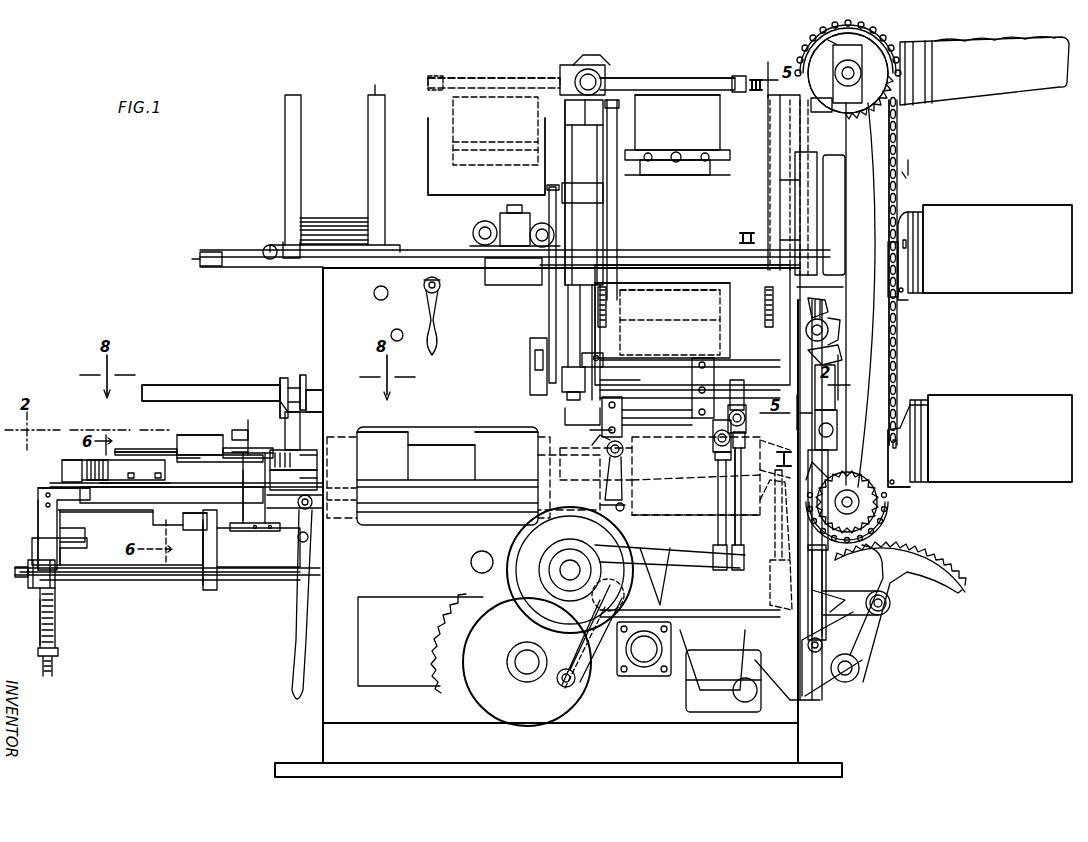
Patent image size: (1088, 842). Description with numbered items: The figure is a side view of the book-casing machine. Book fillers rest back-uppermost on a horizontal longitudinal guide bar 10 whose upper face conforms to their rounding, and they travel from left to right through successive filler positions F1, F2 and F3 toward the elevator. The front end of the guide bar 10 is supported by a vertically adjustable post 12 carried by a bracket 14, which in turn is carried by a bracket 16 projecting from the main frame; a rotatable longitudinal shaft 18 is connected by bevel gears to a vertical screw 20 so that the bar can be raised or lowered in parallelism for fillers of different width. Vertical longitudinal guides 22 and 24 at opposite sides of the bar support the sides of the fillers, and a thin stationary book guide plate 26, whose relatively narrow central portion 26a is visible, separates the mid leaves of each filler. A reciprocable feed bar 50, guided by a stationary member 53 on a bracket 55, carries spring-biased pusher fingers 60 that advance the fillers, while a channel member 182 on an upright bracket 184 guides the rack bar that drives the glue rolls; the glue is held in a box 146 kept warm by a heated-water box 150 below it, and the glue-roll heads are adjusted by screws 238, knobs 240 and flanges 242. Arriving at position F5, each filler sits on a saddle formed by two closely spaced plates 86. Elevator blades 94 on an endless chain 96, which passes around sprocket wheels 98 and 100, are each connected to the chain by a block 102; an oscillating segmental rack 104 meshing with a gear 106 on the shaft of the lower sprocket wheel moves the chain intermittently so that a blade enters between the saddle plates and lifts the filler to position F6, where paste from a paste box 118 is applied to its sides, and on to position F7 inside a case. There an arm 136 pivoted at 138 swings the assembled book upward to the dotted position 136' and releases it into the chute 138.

The guide bar 10 is at (58, 490).
The post 12 is at (44, 523).
The bracket 14 is at (104, 552).
The bracket 16 is at (243, 562).
The longitudinal shaft 18 is at (145, 570).
The screw 20 is at (54, 617).
The vertical longitudinal guide 22 is at (70, 468).
The vertical longitudinal guide 24 is at (138, 468).
The book guide plate 26 is at (183, 520).
The narrow central portion of guide plate 26a is at (430, 452).
The feed bar 50 is at (180, 450).
The stationary member 53 is at (238, 452).
The bracket 55 is at (245, 493).
The pusher finger 60 is at (152, 447).
The saddle plate 86 is at (752, 455).
The elevator blade 94 is at (765, 185).
The endless chain 96 is at (897, 342).
The sprocket wheel 98 is at (872, 112).
The sprocket wheel 100 is at (882, 512).
The block 102 is at (908, 490).
The oscillating segmental rack 104 is at (935, 572).
The gear 106 is at (892, 468).
The paste box 118 is at (626, 272).
The arm 136 is at (667, 65).
The raised position of arm 136' is at (494, 54).
The pivot axis / chute 138 is at (590, 70).
The glue box 146 is at (317, 456).
The heated water box 150 is at (317, 478).
The longitudinal channel member 182 is at (190, 385).
The upright bracket 184 is at (256, 424).
The screw 238 is at (316, 390).
The knob 240 is at (282, 385).
The flange 242 is at (303, 375).
The filler position F1 is at (198, 436).
The filler position F2 is at (398, 440).
The filler position F3 is at (500, 440).
The filler position F5 is at (655, 495).
The filler position F6 is at (712, 310).
The filler position F7 is at (695, 125).